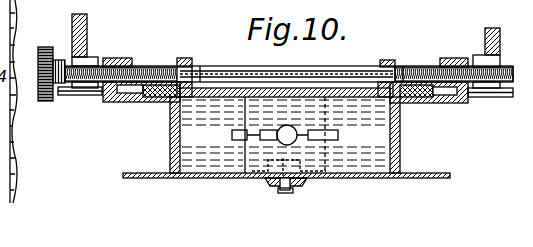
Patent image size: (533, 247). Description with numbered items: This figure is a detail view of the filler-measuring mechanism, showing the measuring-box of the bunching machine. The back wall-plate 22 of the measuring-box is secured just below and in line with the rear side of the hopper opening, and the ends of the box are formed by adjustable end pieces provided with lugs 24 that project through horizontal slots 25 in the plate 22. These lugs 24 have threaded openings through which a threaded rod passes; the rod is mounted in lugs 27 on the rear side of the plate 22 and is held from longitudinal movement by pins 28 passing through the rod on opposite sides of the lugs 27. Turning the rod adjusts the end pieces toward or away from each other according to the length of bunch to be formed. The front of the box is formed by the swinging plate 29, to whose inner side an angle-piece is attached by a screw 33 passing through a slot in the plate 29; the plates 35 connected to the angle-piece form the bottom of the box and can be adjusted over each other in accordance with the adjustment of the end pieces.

The back wall-plate 22 is at (348, 66).
The lugs 24 is at (124, 58).
The horizontal slots 25 is at (99, 98).
The lugs 27 is at (184, 58).
The pins 28 is at (198, 65).
The swinging plate 29 is at (242, 178).
The screw 33 is at (291, 191).
The plates 35 is at (232, 135).